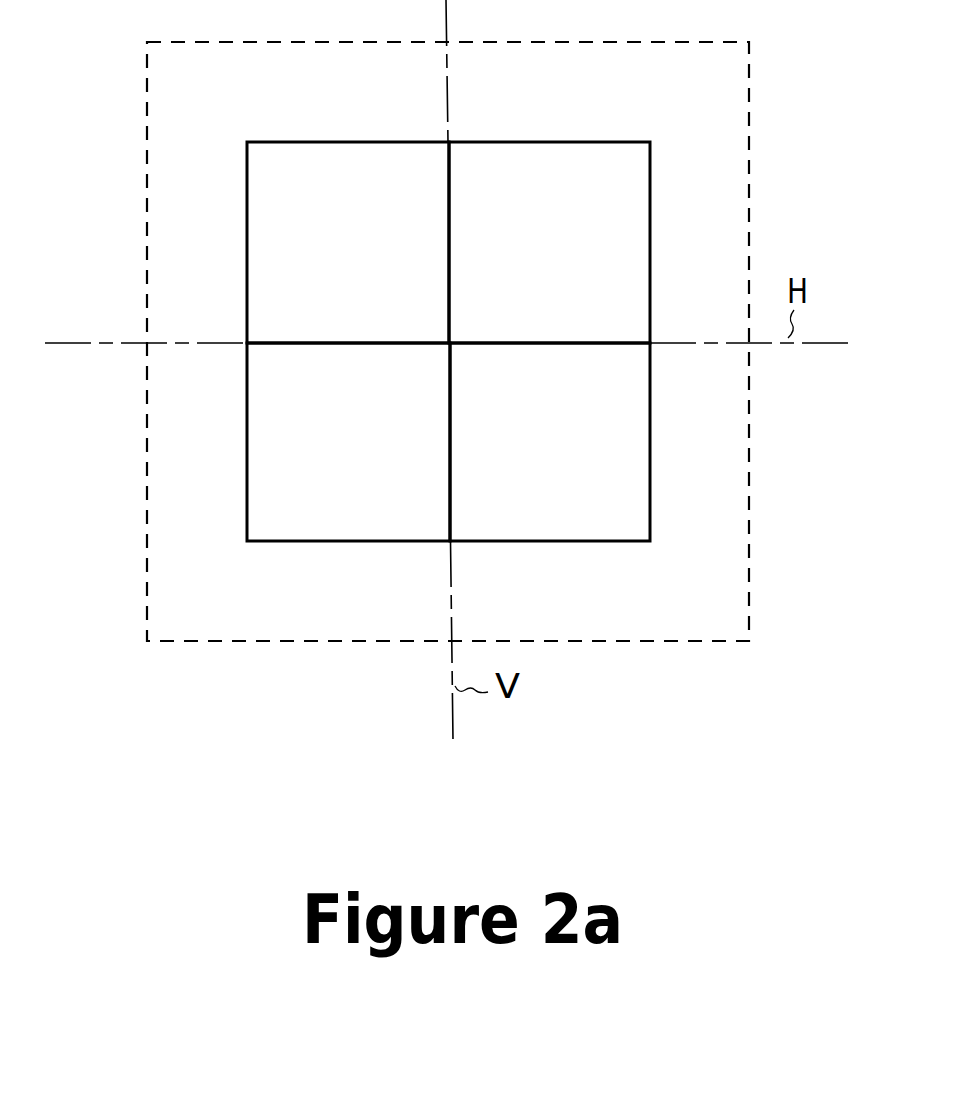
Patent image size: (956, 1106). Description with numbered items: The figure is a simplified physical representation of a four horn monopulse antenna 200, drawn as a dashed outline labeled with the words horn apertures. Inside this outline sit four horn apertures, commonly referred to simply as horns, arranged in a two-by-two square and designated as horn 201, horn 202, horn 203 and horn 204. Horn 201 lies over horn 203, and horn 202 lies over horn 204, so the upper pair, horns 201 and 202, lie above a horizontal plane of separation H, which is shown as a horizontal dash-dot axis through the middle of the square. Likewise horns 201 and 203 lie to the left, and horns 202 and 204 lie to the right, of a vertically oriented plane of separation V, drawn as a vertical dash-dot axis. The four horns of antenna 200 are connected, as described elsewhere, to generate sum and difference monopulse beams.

The four horn monopulse antenna 200 is at (752, 573).
The horn 201 is at (249, 207).
The horn 202 is at (637, 205).
The horn 203 is at (251, 488).
The horn 204 is at (644, 485).